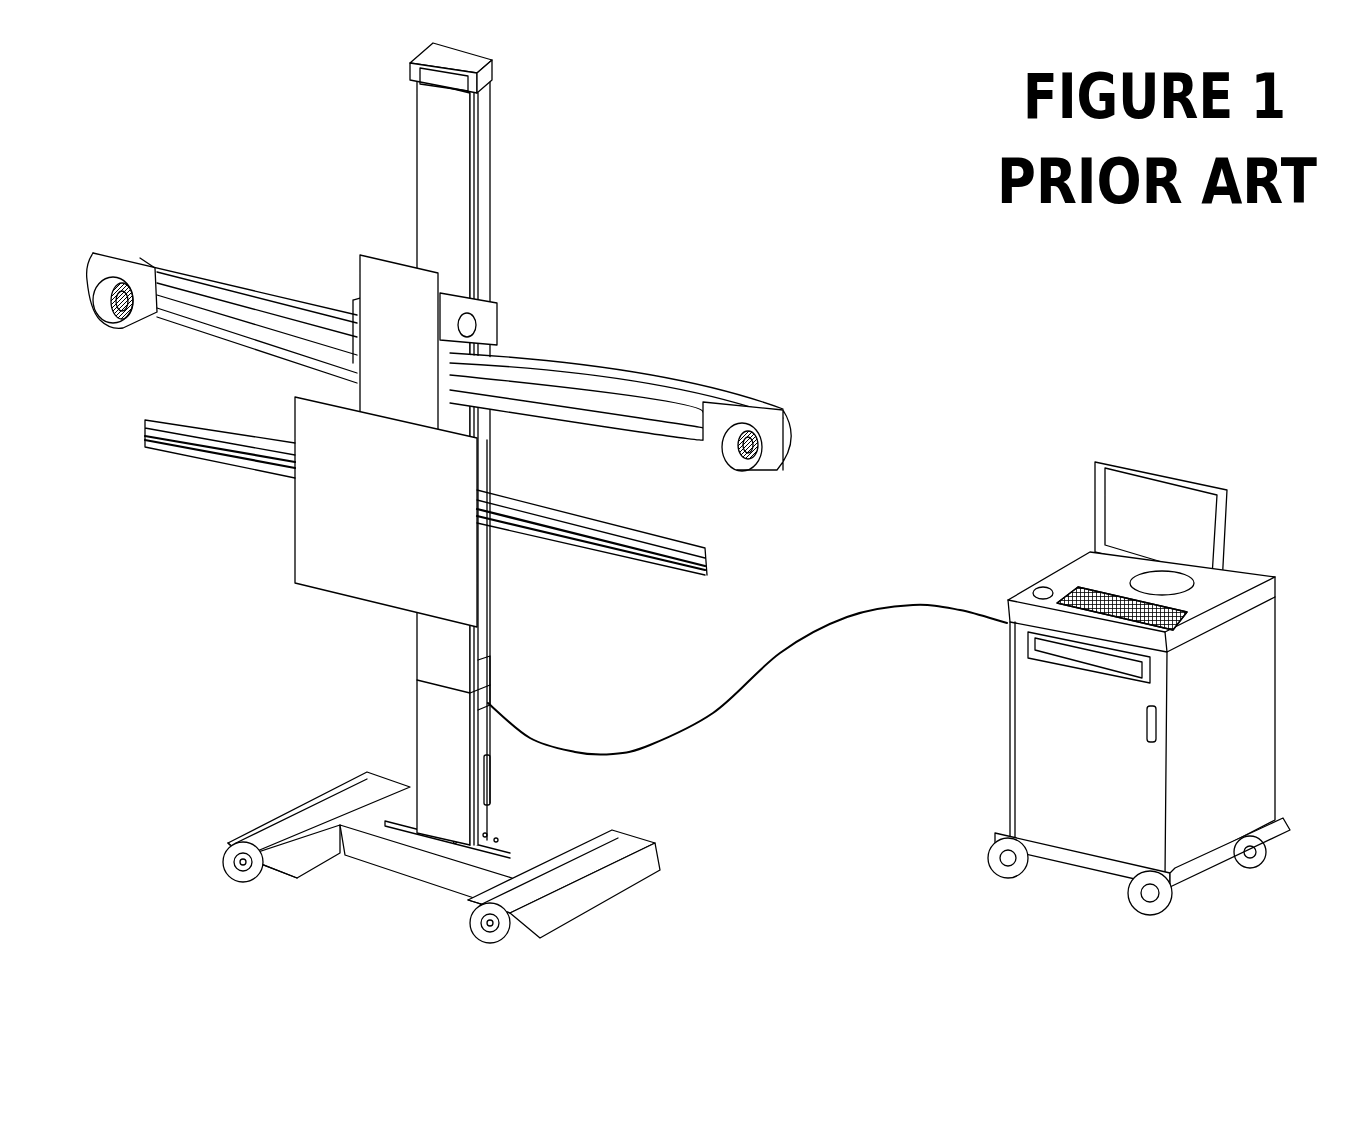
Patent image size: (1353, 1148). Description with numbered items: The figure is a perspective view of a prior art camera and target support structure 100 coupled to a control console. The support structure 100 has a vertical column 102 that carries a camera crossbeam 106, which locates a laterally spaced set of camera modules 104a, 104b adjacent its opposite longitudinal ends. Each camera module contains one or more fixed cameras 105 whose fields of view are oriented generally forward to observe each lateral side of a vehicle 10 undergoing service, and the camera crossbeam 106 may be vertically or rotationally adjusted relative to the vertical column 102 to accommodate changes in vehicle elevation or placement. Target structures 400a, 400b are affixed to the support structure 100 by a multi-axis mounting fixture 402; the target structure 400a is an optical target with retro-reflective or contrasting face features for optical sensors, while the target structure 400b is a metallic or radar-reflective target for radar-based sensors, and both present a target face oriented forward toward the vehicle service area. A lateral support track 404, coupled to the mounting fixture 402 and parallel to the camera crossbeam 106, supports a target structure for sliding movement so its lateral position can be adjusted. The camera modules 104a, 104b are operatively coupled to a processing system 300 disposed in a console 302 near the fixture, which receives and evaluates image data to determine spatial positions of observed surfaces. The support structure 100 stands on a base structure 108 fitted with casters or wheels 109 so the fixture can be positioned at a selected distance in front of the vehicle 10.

The vehicle 10 is at (863, 281).
The support structure 100 is at (568, 220).
The vertical column 102 is at (437, 160).
The camera module 104a is at (797, 433).
The camera module 104b is at (113, 265).
The fixed cameras 105 is at (120, 307).
The camera crossbeam 106 is at (577, 387).
The base structure 108 is at (302, 825).
The casters or wheels 109 is at (230, 877).
The processing system 300 is at (1175, 462).
The console 302 is at (997, 723).
The target structure 400a is at (333, 562).
The target structure 400b is at (382, 467).
The multi-axis mounting fixture 402 is at (462, 330).
The lateral support track 404 is at (572, 550).